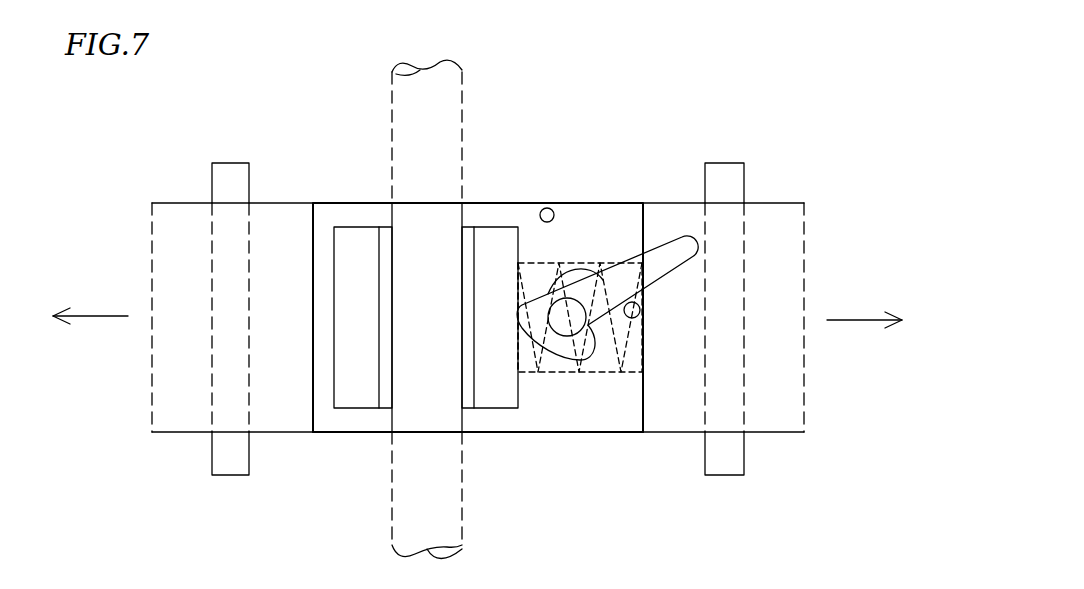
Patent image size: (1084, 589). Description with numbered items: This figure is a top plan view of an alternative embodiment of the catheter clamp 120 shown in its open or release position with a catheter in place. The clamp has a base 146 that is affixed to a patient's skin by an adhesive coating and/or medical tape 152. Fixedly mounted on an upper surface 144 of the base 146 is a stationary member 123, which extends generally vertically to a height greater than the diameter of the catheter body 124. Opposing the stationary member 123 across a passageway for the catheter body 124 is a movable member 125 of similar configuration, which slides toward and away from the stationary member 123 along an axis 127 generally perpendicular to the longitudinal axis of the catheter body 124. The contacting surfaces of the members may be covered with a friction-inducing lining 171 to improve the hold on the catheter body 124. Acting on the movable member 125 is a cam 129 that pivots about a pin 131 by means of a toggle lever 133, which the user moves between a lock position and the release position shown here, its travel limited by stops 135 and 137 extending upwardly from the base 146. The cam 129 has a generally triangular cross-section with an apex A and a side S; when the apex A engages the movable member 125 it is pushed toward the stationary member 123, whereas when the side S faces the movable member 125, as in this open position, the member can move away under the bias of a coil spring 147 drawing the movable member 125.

The catheter clamp 120 is at (701, 521).
The stationary member 123 is at (360, 222).
The catheter body 124 is at (452, 110).
The movable member 125 is at (497, 227).
The axis 127 is at (98, 316).
The cam 129 is at (560, 282).
The pin 131 is at (562, 327).
The toggle lever 133 is at (682, 246).
The stop 135 is at (640, 310).
The stop 137 is at (547, 208).
The upper surface 144 is at (333, 415).
The base 146 is at (325, 210).
The coil spring 147 is at (627, 355).
The medical tape 152 is at (230, 172).
The friction-inducing lining 171 is at (386, 397).
The side S is at (518, 280).
The apex A is at (520, 322).